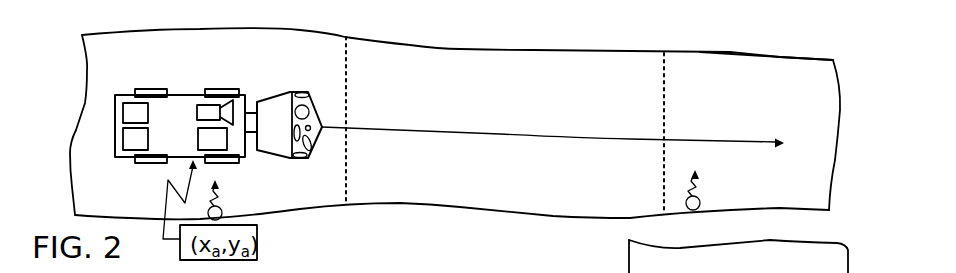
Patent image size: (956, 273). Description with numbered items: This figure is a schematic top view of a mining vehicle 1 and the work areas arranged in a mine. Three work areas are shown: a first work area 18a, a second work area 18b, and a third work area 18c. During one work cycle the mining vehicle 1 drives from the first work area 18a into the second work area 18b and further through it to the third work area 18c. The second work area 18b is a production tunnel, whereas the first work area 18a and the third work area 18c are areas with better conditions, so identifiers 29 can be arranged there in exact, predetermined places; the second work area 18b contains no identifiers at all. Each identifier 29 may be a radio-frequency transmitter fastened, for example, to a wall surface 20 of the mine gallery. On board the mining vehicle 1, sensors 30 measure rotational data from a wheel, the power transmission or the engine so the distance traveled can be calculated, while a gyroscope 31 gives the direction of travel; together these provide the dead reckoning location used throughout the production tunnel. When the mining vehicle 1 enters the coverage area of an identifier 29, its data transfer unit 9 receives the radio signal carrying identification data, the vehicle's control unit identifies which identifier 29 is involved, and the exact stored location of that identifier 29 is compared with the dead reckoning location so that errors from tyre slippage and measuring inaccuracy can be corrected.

The mining vehicle 1 is at (174, 122).
The data transfer unit 9 is at (220, 142).
The first work area 18a is at (293, 68).
The second work area 18b is at (526, 84).
The third work area 18c is at (769, 96).
The wall surface 20 is at (316, 207).
The identifier 29 is at (222, 210).
The sensors 30 is at (135, 120).
The gyroscope 31 is at (133, 138).